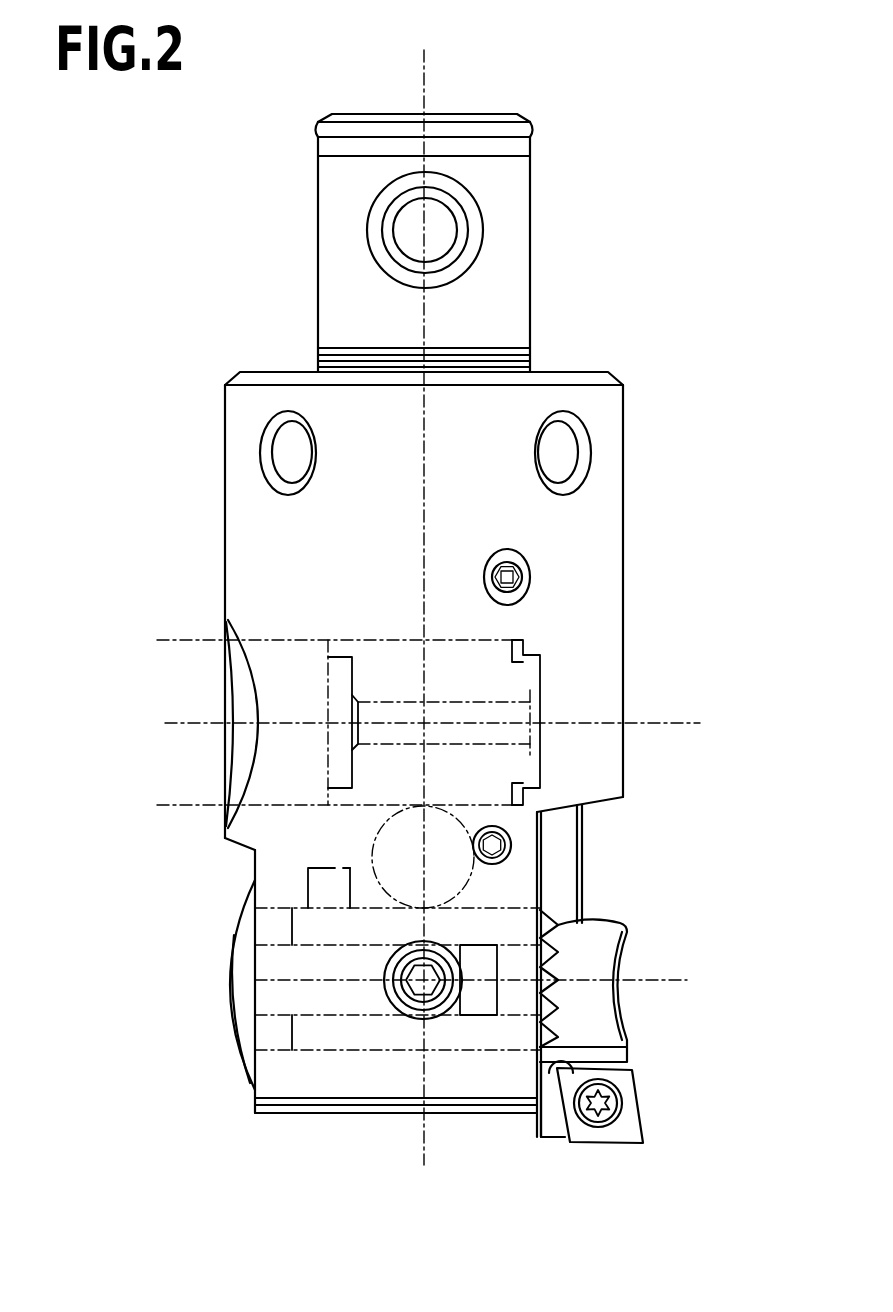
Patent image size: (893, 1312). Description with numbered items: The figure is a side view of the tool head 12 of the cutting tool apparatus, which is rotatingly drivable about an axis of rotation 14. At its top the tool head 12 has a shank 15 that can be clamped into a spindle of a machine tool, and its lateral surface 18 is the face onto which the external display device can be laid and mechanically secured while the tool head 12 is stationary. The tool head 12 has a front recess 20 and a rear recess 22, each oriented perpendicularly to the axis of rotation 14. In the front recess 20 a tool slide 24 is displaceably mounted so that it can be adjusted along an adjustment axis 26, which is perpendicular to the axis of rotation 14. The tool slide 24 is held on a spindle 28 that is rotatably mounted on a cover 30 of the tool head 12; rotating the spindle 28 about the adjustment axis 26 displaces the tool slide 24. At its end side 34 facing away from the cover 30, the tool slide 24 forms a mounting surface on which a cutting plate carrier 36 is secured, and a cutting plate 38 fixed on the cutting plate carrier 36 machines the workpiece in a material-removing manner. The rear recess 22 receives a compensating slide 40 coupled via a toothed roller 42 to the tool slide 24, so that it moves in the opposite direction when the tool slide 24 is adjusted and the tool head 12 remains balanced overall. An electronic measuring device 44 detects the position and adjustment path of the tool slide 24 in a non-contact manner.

The tool head 12 is at (640, 366).
The axis of rotation 14 is at (424, 64).
The shank 15 is at (502, 255).
The lateral surface 18 is at (590, 600).
The front recess 20 is at (272, 1038).
The rear recess 22 is at (262, 640).
The tool slide 24 is at (490, 1033).
The adjustment axis 26 is at (670, 978).
The spindle 28 is at (268, 998).
The cover 30 is at (265, 943).
The end side 34 is at (602, 923).
The cutting plate carrier 36 is at (603, 1050).
The cutting plate 38 is at (628, 1130).
The compensating slide 40 is at (383, 786).
The toothed roller 42 is at (388, 850).
The electronic measuring device 44 is at (327, 887).